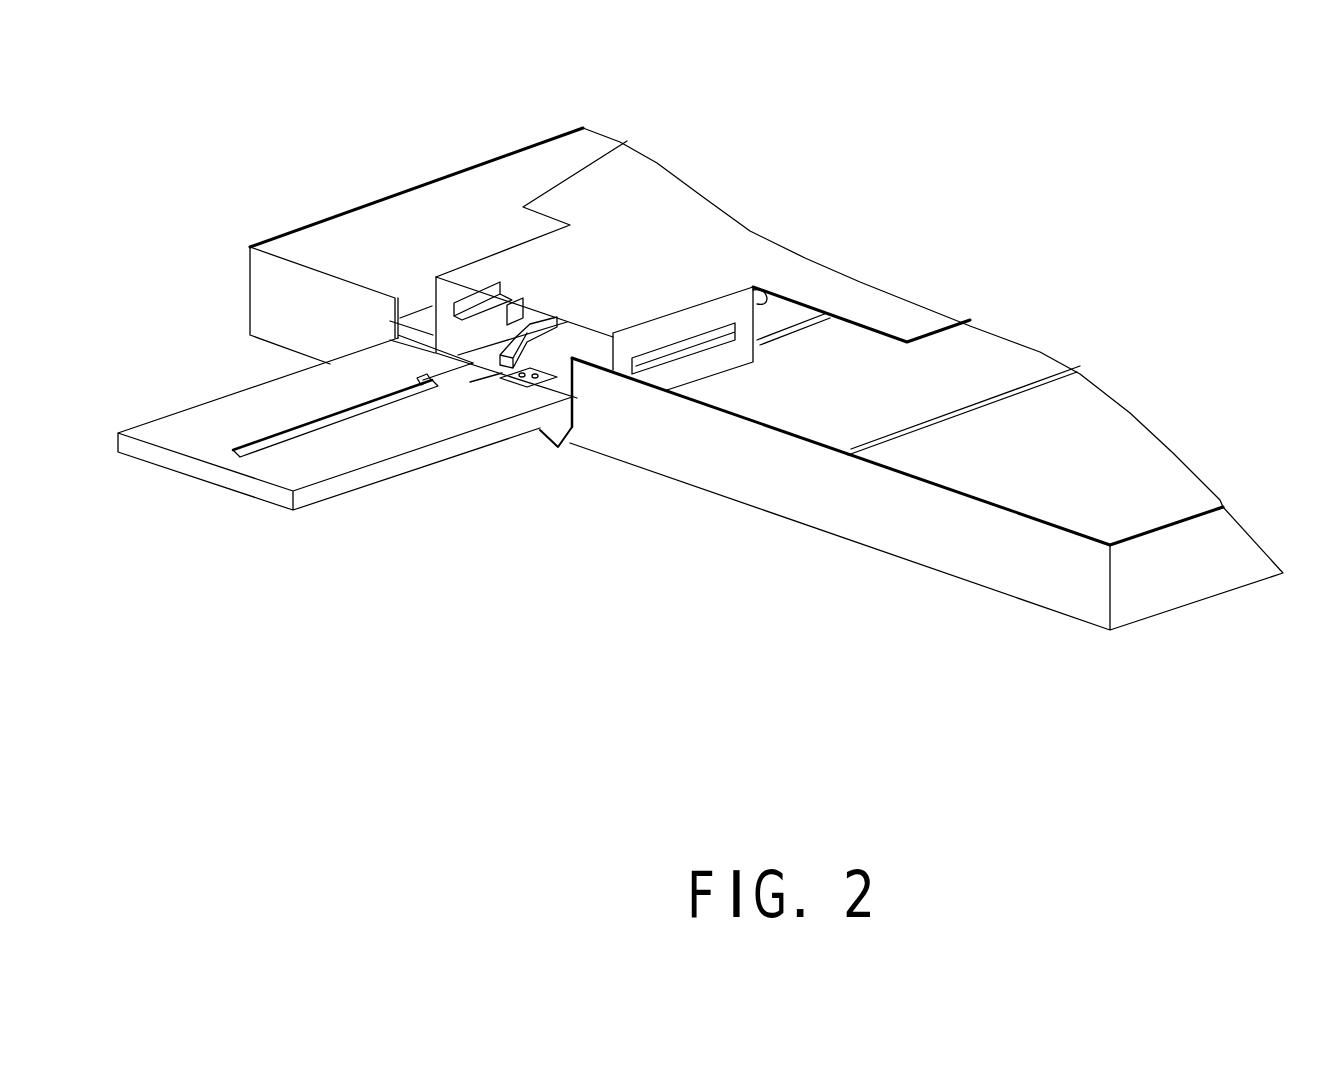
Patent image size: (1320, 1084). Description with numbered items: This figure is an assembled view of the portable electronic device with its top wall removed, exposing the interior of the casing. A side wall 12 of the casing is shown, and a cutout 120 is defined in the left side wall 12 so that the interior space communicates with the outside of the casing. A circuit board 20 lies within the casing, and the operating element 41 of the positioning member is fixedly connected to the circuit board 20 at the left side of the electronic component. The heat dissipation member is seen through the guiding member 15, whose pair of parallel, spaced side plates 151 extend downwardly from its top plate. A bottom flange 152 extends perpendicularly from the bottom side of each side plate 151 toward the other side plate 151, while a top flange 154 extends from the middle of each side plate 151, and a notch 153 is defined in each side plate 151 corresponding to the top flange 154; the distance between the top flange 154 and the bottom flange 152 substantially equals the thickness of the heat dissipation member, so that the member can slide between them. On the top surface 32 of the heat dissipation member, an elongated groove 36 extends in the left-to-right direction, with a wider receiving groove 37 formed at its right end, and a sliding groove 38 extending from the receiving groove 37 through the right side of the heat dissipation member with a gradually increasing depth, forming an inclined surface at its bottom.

The side wall 12 is at (987, 540).
The guiding member 15 is at (610, 203).
The circuit board 20 is at (842, 408).
The top surface 32 is at (270, 470).
The elongated groove 36 is at (322, 423).
The receiving groove 37 is at (438, 378).
The sliding groove 38 is at (480, 383).
The operating element 41 is at (546, 375).
The cutout 120 is at (568, 380).
The side plate 151 is at (447, 305).
The bottom flange 152 is at (432, 300).
The notch 153 is at (465, 298).
The top flange 154 is at (485, 290).